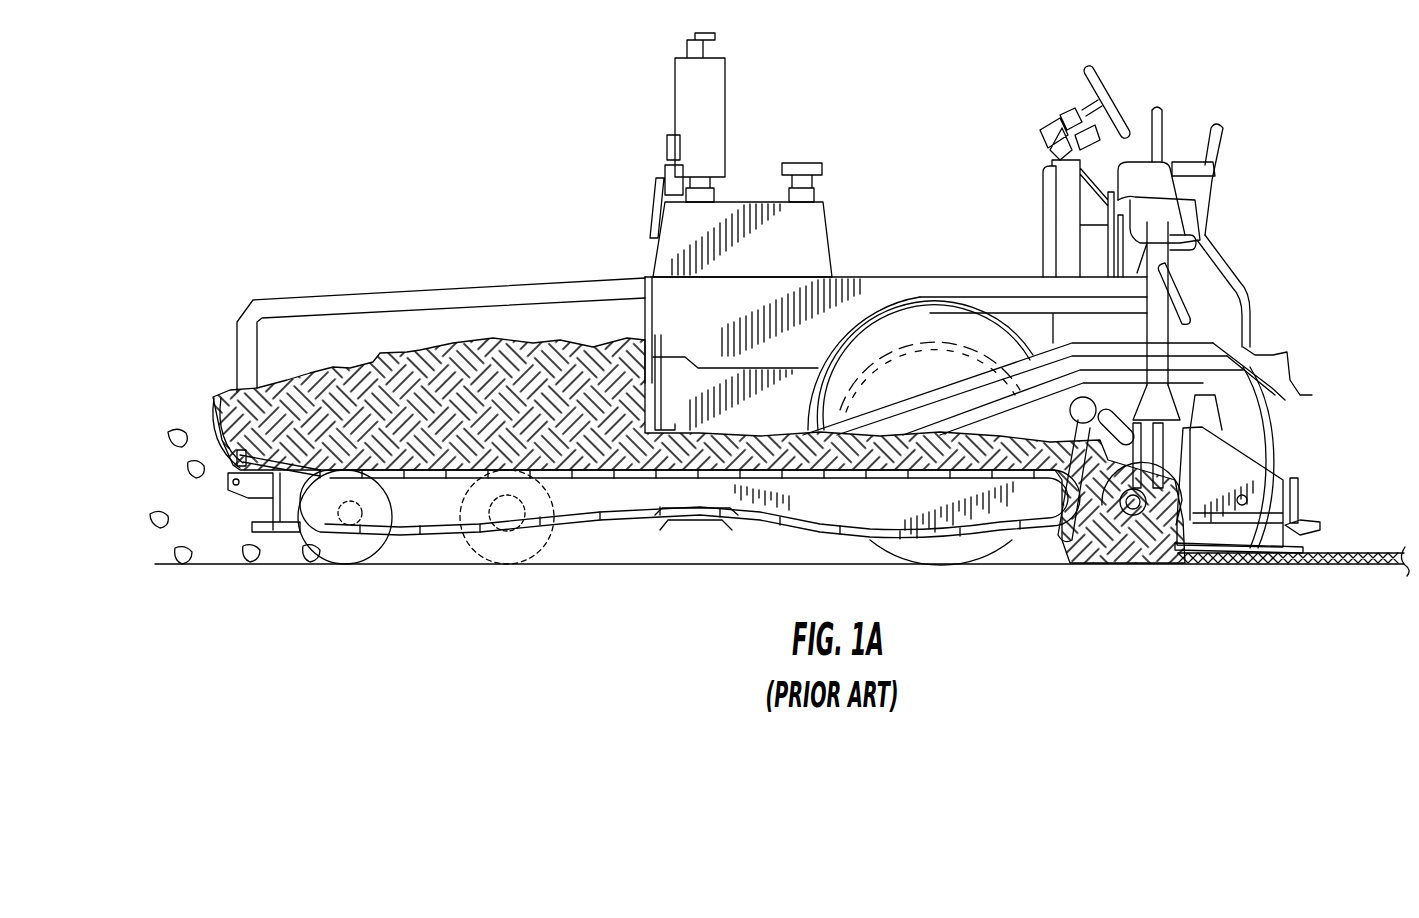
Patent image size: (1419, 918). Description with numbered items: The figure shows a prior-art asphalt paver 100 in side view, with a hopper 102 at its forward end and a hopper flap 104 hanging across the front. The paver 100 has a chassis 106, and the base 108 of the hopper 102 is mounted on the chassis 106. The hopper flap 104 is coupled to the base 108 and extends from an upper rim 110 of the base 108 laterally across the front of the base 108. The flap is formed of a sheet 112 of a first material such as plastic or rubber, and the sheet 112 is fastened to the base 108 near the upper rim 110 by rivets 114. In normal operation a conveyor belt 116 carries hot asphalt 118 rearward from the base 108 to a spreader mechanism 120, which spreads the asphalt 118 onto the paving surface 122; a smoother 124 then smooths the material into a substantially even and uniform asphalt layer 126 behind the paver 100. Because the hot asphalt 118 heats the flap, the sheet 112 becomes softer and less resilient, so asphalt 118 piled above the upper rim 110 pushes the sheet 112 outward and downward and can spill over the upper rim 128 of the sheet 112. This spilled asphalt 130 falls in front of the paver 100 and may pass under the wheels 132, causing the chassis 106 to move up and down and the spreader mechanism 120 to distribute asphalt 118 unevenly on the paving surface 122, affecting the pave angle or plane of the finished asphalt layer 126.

The asphalt paver 100 is at (238, 152).
The hopper 102 is at (418, 330).
The hopper flap 104 is at (214, 430).
The chassis 106 is at (680, 515).
The base 108 is at (432, 478).
The upper rim 110 is at (364, 302).
The sheet 112 is at (232, 455).
The rivets 114 is at (236, 476).
The conveyor belt 116 is at (518, 480).
The hot asphalt 118 is at (321, 385).
The spreader mechanism 120 is at (1232, 467).
The paving surface 122 is at (727, 568).
The smoother 124 is at (1258, 548).
The asphalt layer 126 is at (1366, 560).
The upper rim of the sheet 128 is at (214, 403).
The spilled asphalt 130 is at (182, 556).
The wheels 132 is at (352, 545).